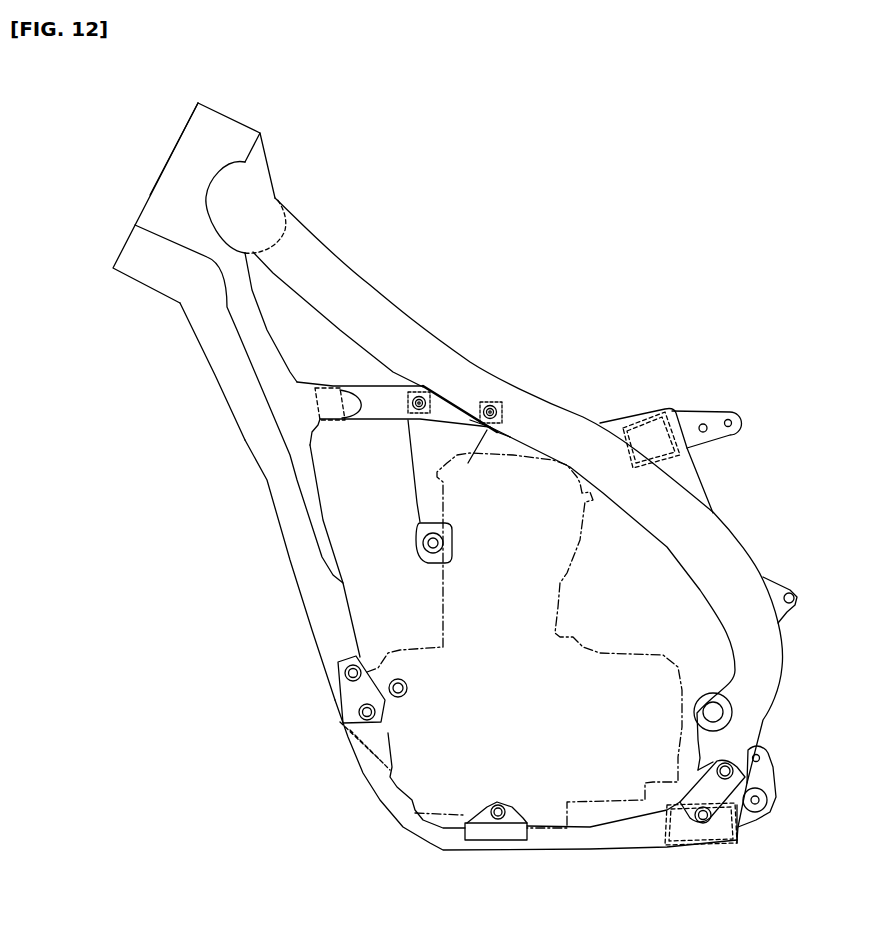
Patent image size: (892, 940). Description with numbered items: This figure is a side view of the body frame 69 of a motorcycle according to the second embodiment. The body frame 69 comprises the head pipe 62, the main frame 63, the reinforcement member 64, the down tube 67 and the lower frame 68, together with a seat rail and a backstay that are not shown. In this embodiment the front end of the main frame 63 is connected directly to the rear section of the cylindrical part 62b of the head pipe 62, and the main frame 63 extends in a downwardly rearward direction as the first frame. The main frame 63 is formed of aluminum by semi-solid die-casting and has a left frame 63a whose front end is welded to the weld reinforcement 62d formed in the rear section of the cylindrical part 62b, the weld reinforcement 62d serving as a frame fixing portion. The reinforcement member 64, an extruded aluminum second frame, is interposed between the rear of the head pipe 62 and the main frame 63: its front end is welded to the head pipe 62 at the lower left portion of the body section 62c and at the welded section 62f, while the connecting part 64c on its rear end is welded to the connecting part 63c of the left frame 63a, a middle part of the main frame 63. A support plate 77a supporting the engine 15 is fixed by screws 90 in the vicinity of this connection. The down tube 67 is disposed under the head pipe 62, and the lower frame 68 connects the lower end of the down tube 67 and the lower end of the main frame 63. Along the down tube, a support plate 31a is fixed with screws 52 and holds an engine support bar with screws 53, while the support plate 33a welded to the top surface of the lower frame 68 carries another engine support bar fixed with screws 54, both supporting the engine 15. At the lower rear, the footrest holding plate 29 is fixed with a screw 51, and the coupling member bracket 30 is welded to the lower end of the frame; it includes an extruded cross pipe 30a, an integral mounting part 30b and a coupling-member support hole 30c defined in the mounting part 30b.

The head pipe 62 is at (181, 182).
The cylindrical part 62b is at (196, 123).
The body section 62c is at (265, 367).
The weld reinforcement 62d is at (285, 230).
The welded section 62f is at (318, 432).
The main frame 63 is at (525, 519).
The left frame 63a is at (571, 423).
The connecting part 63c is at (513, 407).
The reinforcement member 64 is at (368, 392).
The connecting part 64c is at (463, 407).
The down tube 67 is at (208, 333).
The lower frame 68 is at (441, 852).
The body frame 69 is at (195, 605).
The support plate 77a is at (425, 450).
The screw 90 is at (418, 383).
The engine 15 is at (562, 602).
The screw 52 is at (343, 674).
The screw 53 is at (372, 669).
The screw 54 is at (498, 804).
The support plate 33a is at (513, 817).
The support plate 31a is at (392, 767).
The screw 51 is at (717, 763).
The footrest holding plate 29 is at (733, 780).
The coupling member bracket 30 is at (753, 822).
The cross pipe 30a is at (718, 830).
The mounting part 30b is at (762, 813).
The coupling-member support hole 30c is at (763, 788).